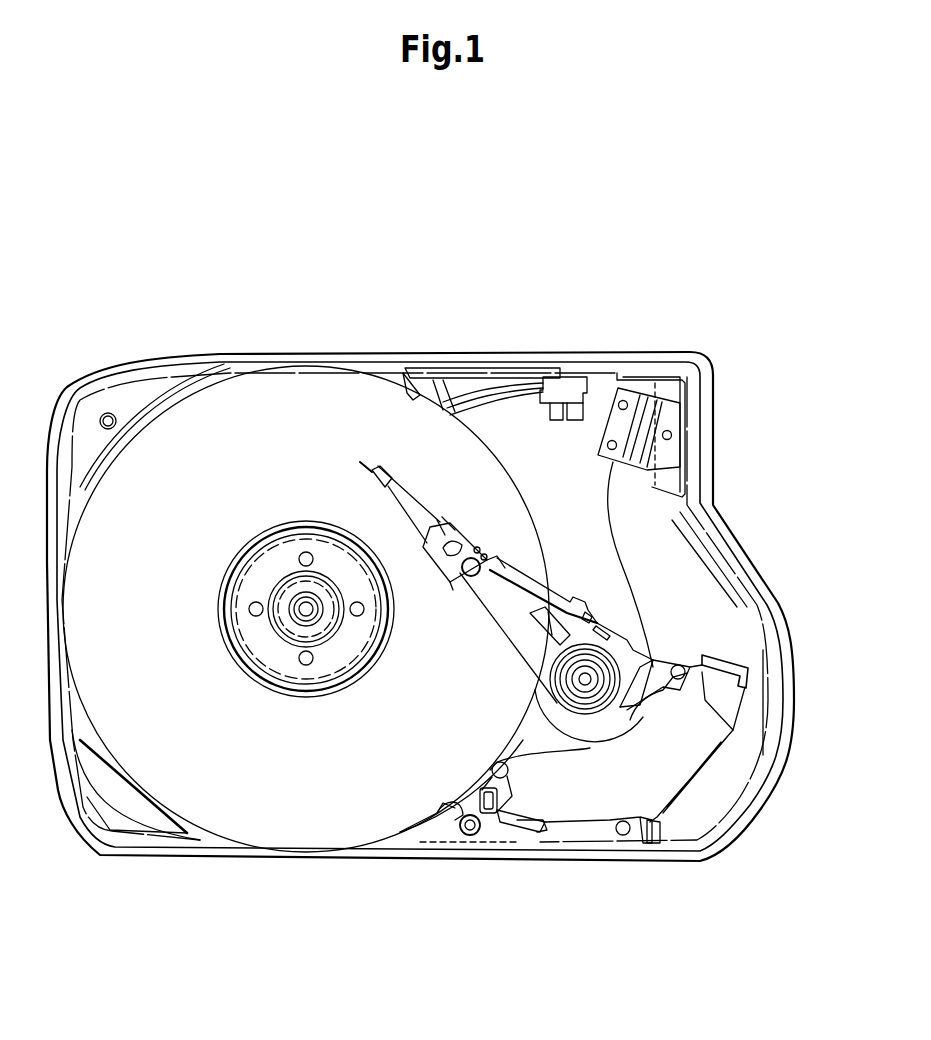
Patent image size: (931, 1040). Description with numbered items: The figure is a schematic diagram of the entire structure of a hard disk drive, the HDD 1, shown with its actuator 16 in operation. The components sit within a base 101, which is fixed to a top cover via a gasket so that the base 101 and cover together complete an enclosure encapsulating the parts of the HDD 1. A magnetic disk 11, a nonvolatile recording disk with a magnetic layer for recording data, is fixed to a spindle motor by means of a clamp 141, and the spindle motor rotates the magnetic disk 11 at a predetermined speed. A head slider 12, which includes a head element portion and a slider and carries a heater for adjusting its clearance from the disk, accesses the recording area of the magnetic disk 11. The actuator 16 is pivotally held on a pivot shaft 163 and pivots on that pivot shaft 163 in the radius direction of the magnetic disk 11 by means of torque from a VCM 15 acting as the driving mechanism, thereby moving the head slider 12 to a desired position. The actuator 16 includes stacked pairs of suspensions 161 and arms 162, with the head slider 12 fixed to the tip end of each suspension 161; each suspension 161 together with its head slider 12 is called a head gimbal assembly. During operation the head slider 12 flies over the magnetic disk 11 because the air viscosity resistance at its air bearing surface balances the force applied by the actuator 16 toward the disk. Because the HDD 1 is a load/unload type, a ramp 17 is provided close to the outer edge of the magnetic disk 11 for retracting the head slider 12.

The HDD 1 is at (412, 320).
The magnetic disk 11 is at (260, 392).
The head slider 12 is at (362, 476).
The VCM (voice coil motor) 15 is at (730, 770).
The actuator 16 is at (595, 559).
The ramp 17 is at (560, 380).
The base 101 is at (710, 402).
The clamp 141 is at (280, 663).
The suspension 161 is at (428, 505).
The arm 162 is at (487, 622).
The pivot shaft 163 is at (582, 680).